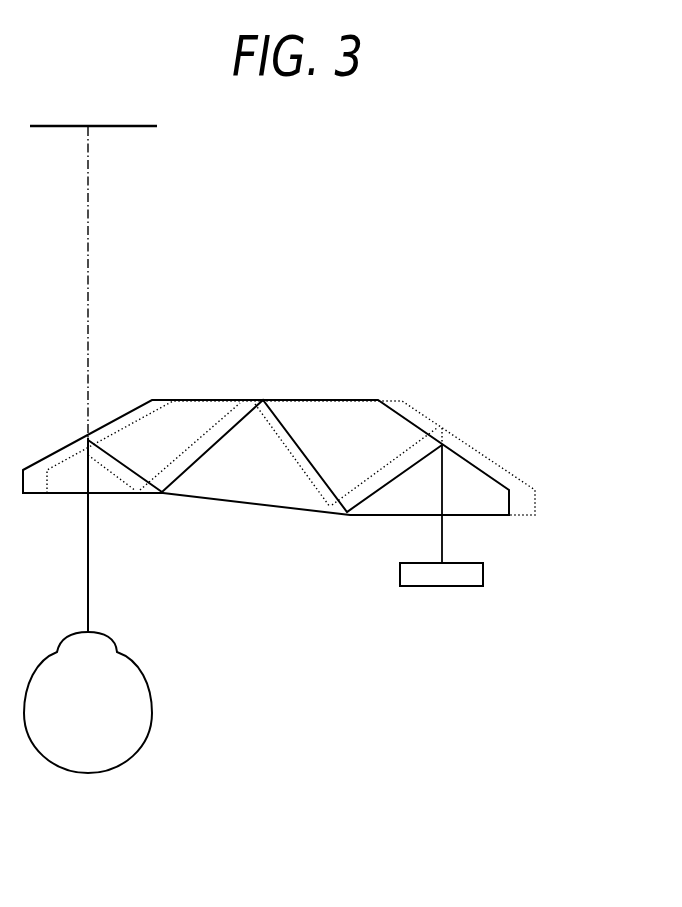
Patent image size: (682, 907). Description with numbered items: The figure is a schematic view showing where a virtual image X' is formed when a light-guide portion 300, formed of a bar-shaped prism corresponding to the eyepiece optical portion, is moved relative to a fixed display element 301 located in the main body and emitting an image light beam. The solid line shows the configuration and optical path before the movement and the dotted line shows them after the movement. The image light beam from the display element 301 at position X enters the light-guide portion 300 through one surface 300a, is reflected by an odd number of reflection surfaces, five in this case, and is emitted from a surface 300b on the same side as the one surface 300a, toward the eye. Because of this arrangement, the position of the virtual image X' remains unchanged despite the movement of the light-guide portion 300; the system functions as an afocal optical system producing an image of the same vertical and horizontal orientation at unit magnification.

The light-guide portion 300 is at (487, 488).
The one surface 300a is at (495, 515).
The surface 300b is at (115, 493).
The display element 301 is at (468, 580).
The display position X is at (481, 508).
The virtual image X' is at (112, 282).